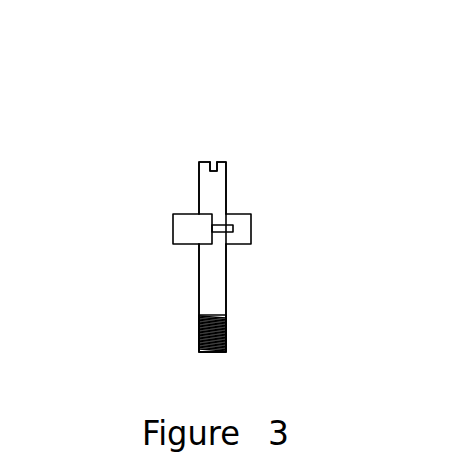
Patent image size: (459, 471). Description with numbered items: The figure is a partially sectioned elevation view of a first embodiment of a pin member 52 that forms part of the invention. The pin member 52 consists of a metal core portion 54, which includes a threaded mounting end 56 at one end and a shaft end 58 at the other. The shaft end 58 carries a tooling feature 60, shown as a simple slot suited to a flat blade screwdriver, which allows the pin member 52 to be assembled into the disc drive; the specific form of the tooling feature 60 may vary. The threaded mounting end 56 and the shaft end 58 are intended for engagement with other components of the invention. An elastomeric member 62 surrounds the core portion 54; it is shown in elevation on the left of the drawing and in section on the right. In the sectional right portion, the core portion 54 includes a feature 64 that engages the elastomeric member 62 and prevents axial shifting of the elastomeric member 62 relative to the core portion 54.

The pin member 52 is at (257, 183).
The core portion 54 is at (198, 211).
The threaded mounting end 56 is at (226, 330).
The shaft end 58 is at (213, 188).
The tooling feature 60 is at (211, 171).
The elastomeric member 62 is at (192, 228).
The feature 64 is at (233, 231).